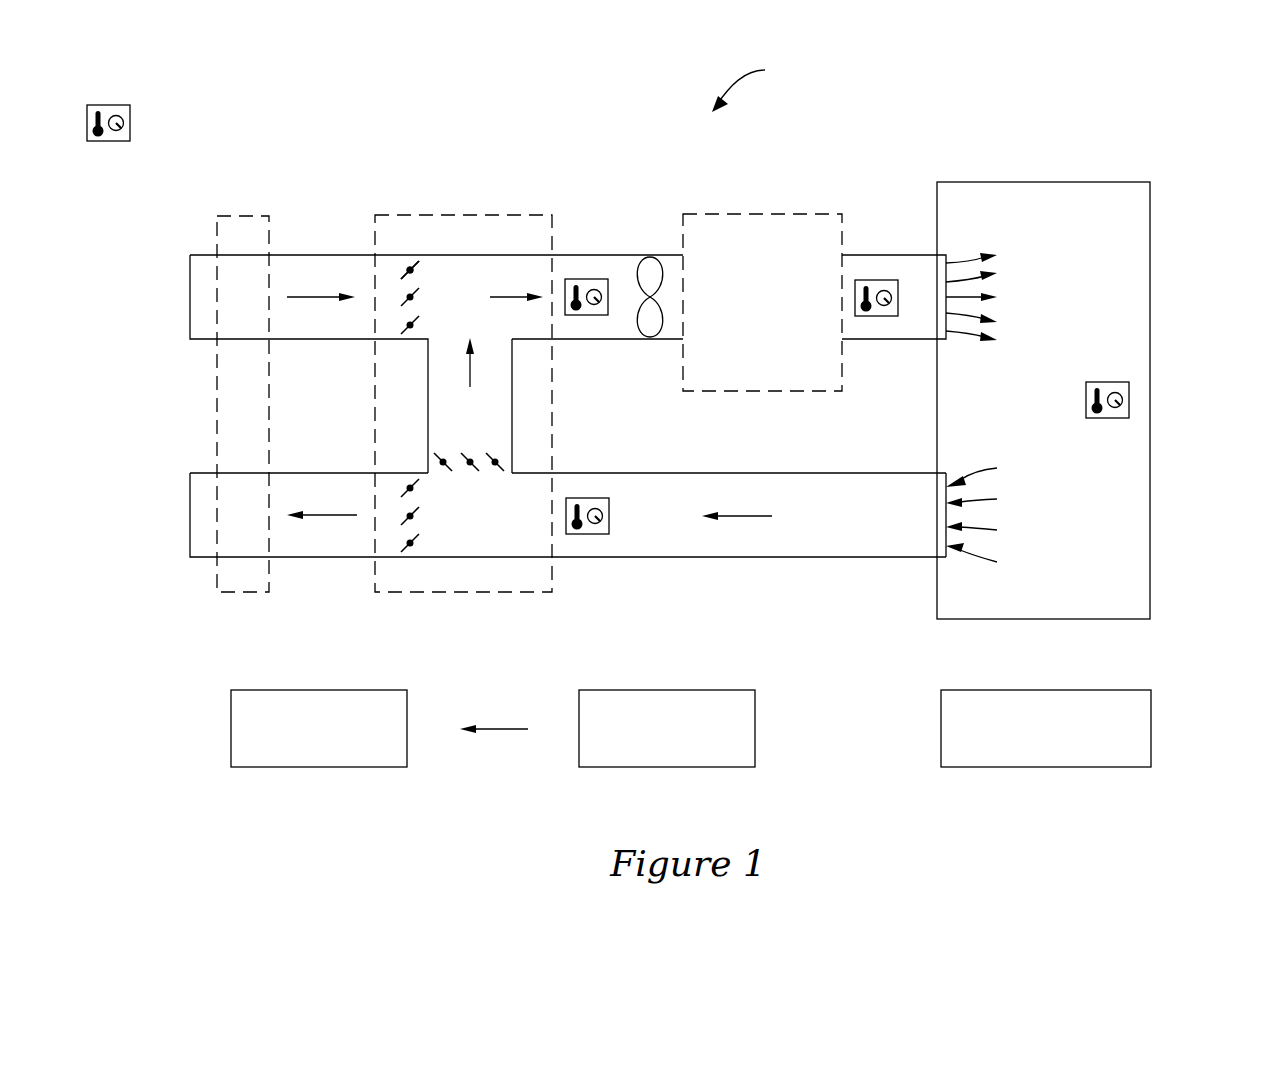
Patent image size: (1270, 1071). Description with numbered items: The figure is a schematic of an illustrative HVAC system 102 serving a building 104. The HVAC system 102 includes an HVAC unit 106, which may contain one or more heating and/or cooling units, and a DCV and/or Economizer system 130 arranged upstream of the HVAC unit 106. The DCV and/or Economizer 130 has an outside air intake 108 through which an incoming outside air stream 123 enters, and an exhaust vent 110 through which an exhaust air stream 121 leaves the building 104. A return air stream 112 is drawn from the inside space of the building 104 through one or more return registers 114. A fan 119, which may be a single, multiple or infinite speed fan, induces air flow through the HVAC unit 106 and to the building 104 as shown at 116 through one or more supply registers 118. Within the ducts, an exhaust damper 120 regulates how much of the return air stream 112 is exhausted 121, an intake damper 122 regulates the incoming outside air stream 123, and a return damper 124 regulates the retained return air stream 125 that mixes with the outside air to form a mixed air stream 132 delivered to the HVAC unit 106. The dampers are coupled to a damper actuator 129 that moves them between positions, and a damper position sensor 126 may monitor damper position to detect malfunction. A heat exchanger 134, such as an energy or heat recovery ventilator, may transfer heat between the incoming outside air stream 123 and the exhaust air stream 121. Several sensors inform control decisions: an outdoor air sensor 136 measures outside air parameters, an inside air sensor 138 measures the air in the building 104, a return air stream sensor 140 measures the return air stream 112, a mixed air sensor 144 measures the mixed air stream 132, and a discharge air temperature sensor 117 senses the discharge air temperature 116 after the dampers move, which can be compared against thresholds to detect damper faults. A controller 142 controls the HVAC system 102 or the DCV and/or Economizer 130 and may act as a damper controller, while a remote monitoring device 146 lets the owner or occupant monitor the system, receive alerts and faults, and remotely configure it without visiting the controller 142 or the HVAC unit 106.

The HVAC system 102 is at (761, 84).
The building 104 is at (1150, 224).
The HVAC unit 106 is at (763, 214).
The outside air intake 108 is at (190, 297).
The exhaust vent 110 is at (190, 515).
The return air stream 112 is at (750, 516).
The return registers 114 is at (946, 552).
The air flow to the building (discharge air) 116 is at (908, 297).
The discharge air temperature sensor 117 is at (876, 315).
The supply registers 118 is at (946, 257).
The fan 119 is at (660, 283).
The exhaust damper 120 is at (407, 520).
The exhaust air stream 121 is at (333, 515).
The intake damper 122 is at (405, 297).
The incoming outside air stream 123 is at (309, 297).
The return damper 124 is at (470, 465).
The retained return air stream 125 is at (470, 378).
The damper position sensor 126 is at (410, 268).
The damper actuator 129 is at (319, 767).
The DCV and/or Economizer system 130 is at (465, 215).
The mixed air stream 132 is at (505, 297).
The heat exchanger 134 is at (243, 216).
The outdoor air sensor 136 is at (108, 105).
The inside air sensor 138 is at (1128, 389).
The return air stream sensor 140 is at (586, 534).
The controller 142 is at (755, 729).
The mixed air sensor 144 is at (588, 279).
The remote monitoring device 146 is at (1151, 728).